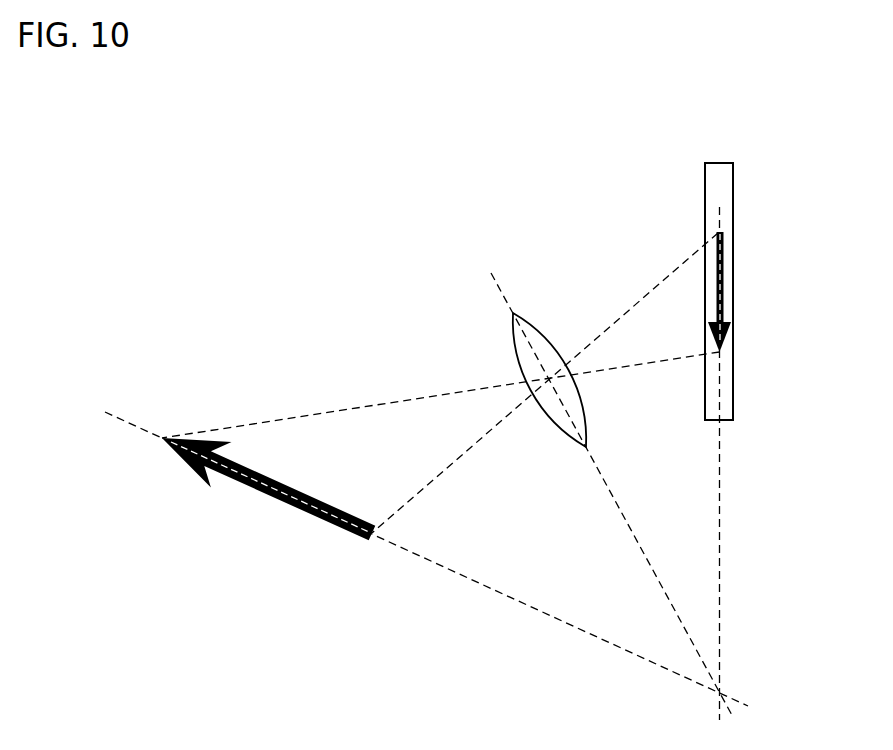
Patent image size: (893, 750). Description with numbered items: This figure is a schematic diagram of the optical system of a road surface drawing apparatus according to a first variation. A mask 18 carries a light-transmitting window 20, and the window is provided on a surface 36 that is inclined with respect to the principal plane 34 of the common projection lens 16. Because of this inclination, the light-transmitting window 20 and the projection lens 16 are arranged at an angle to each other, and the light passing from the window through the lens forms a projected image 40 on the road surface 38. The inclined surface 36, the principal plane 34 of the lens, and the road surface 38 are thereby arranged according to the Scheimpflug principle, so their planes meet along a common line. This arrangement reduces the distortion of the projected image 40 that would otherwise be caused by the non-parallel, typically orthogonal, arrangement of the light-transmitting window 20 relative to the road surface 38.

The common projection lens 16 is at (538, 330).
The mask 18 is at (720, 162).
The light-transmitting window 20 is at (724, 246).
The principal plane 34 is at (497, 287).
The surface 36 is at (722, 494).
The road surface 38 is at (485, 585).
The projected image 40 is at (308, 512).